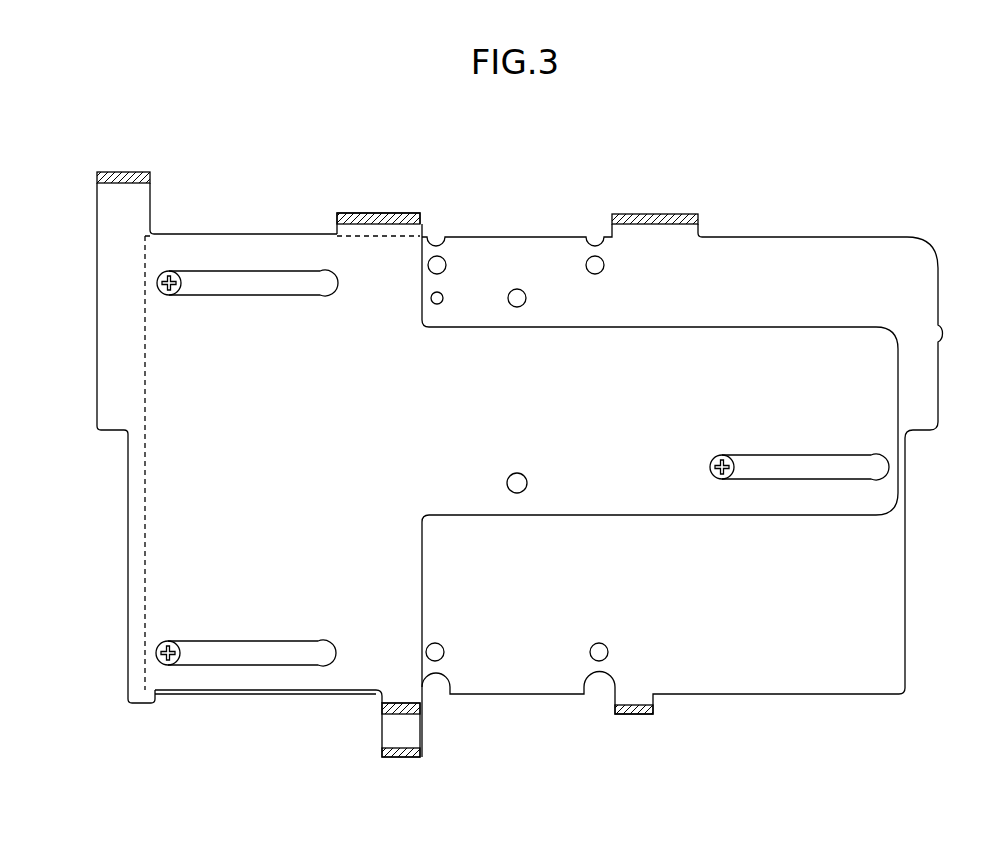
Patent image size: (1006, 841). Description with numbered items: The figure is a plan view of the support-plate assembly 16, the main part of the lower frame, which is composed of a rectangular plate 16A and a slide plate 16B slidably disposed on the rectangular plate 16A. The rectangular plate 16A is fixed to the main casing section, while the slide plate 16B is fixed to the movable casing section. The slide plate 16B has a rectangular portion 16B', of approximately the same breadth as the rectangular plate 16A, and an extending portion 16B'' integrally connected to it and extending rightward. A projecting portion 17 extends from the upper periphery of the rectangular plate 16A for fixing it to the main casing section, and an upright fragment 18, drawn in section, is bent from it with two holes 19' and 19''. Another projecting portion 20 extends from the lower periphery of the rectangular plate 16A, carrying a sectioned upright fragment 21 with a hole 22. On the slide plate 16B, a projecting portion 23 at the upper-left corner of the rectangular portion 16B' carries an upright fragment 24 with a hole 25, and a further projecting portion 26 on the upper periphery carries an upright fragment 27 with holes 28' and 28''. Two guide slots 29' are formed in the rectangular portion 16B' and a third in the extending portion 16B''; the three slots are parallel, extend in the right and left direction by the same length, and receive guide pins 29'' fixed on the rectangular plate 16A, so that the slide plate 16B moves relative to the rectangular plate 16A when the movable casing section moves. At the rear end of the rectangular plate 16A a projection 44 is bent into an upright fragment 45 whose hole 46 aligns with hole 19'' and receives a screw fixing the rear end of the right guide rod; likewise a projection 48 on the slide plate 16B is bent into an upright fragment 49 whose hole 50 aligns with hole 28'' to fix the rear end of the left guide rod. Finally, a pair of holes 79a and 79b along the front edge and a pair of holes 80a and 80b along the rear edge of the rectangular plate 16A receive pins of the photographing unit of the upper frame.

The support-plate assembly 16 is at (492, 234).
The rectangular plate 16A is at (907, 568).
The slide plate 16B is at (212, 443).
The rectangular portion 16B' is at (290, 366).
The extending portion 16B'' is at (650, 416).
The projecting portion 17 is at (700, 226).
The upright fragment 18 is at (654, 213).
The hole 19' is at (672, 272).
The hole 19'' is at (633, 257).
The projecting portion 20 is at (410, 728).
The upright fragment 21 is at (385, 758).
The hole 22 is at (402, 759).
The projecting portion 23 is at (97, 230).
The upright fragment 24 is at (108, 171).
The hole 25 is at (118, 171).
The projecting portion 26 is at (340, 214).
The upright fragment 27 is at (415, 212).
The hole 28' is at (358, 254).
The hole 28'' is at (395, 270).
The guide slot 29' is at (528, 468).
The guide pin 29'' is at (449, 468).
The projection 44 is at (655, 698).
The upright fragment 45 is at (618, 714).
The hole 46 is at (636, 715).
The projection 48 is at (378, 698).
The upright fragment 49 is at (421, 708).
The hole 50 is at (402, 716).
The hole 79a is at (595, 275).
The hole 79b is at (445, 271).
The hole 80a is at (608, 652).
The hole 80b is at (444, 652).